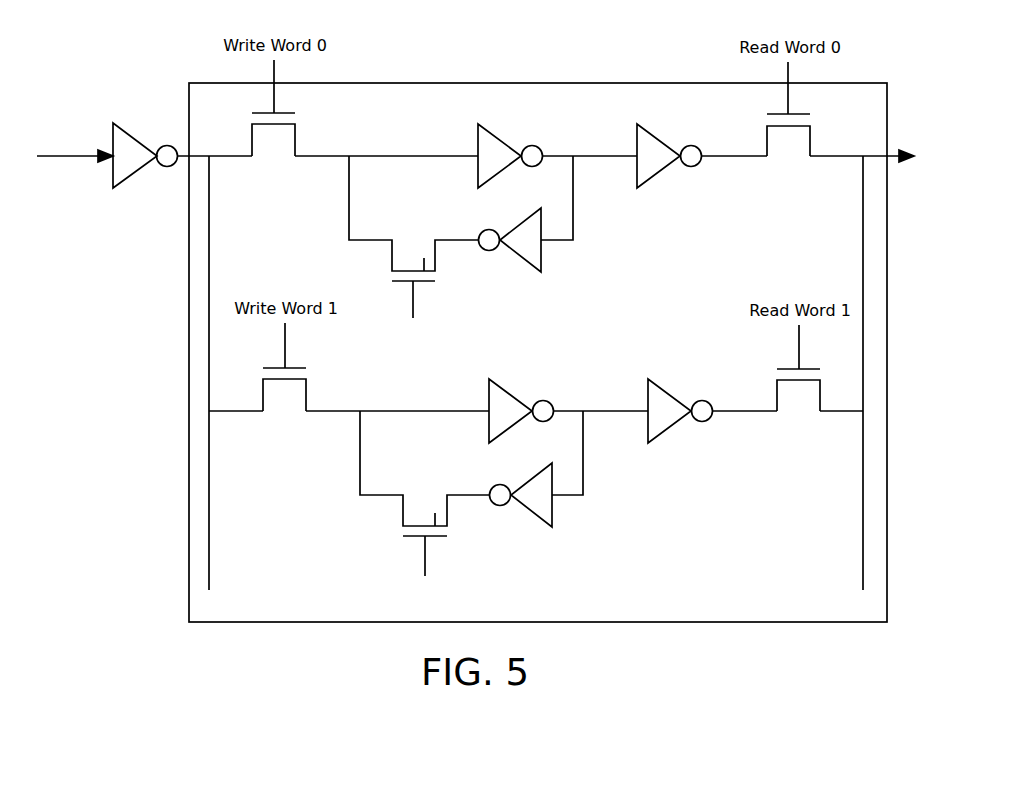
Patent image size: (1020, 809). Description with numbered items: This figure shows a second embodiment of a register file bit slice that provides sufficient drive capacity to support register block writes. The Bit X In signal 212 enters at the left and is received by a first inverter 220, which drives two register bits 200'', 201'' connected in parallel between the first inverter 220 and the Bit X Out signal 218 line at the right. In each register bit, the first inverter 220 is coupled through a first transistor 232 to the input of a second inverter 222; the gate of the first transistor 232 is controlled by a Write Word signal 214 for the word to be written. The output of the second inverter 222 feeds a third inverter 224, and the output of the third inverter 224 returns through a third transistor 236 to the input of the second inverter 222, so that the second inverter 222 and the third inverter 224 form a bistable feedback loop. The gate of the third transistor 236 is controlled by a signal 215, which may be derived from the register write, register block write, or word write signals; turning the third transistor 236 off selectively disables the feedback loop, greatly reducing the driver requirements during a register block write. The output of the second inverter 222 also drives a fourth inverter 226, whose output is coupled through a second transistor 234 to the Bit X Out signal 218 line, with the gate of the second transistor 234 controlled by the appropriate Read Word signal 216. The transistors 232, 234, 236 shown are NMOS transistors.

The Bit X In signal 212 is at (58, 157).
The first inverter 220 is at (133, 172).
The Write Word signal 214 is at (275, 92).
The first transistor 232 is at (285, 127).
The third transistor 236 is at (424, 262).
The signal 215 is at (413, 292).
The second inverter 222 is at (503, 145).
The third inverter 224 is at (518, 258).
The fourth inverter 226 is at (652, 180).
The Read Word signal 216 is at (787, 92).
The second transistor 234 is at (798, 127).
The Bit X Out signal 218 is at (832, 158).
The register bit 200'' is at (531, 233).
The register bit 201'' is at (536, 488).